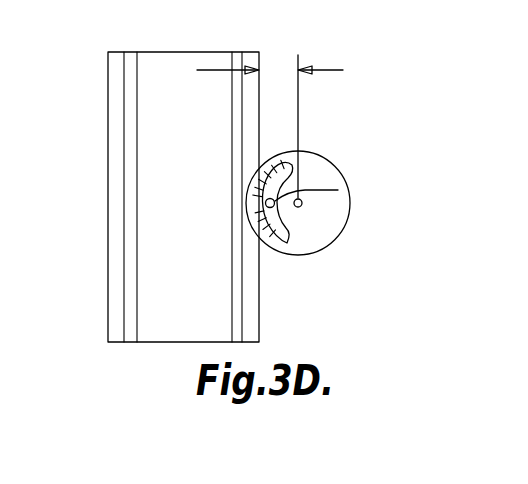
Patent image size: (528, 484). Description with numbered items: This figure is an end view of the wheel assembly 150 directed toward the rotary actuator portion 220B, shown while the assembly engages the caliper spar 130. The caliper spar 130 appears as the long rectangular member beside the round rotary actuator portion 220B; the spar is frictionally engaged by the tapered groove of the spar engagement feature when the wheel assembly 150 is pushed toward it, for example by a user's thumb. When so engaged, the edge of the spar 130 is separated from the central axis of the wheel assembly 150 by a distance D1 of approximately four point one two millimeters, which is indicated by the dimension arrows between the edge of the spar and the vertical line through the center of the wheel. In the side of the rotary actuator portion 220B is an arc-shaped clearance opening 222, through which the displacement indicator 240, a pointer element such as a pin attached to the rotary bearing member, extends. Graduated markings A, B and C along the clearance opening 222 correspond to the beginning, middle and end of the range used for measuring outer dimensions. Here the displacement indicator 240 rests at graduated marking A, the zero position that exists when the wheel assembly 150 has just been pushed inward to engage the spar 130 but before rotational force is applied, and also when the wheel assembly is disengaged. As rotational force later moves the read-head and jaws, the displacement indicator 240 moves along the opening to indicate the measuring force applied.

The caliper spar 130 is at (163, 54).
The distance D1 is at (329, 69).
The clearance opening 222 is at (281, 152).
The displacement indicator 240 is at (338, 190).
The rotary actuator portion 220B is at (306, 256).
The wheel assembly 150 is at (336, 212).
The graduated marking A is at (264, 202).
The graduated marking B is at (264, 225).
The graduated marking C is at (282, 244).